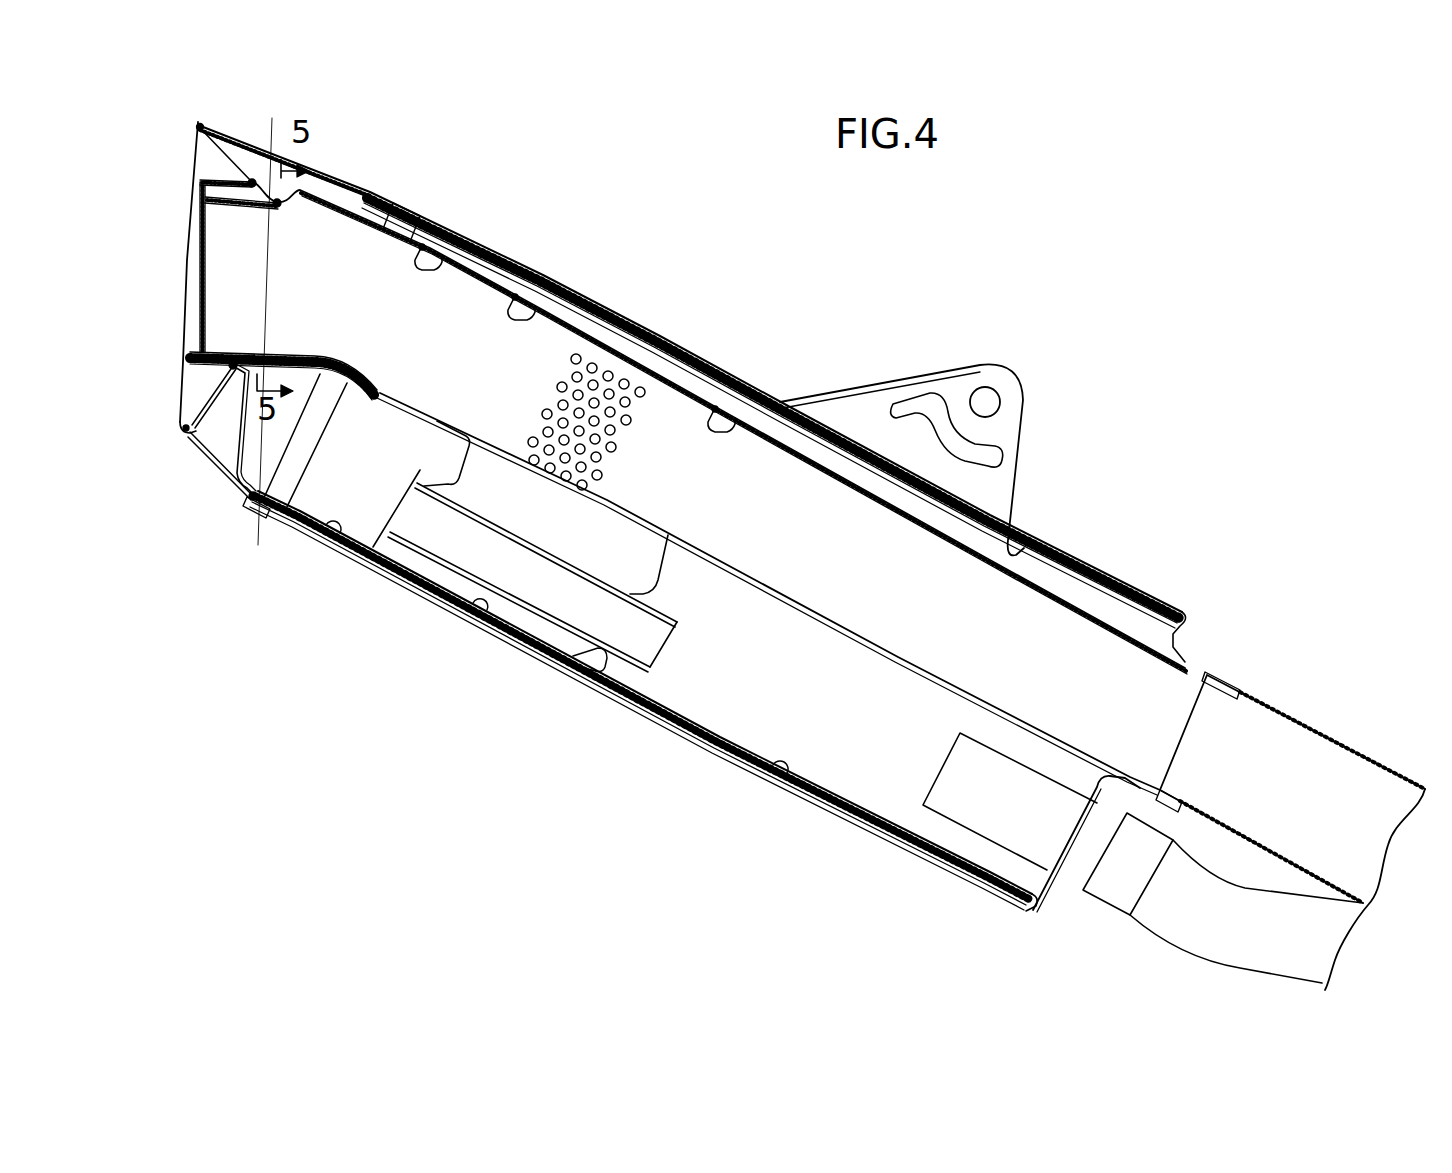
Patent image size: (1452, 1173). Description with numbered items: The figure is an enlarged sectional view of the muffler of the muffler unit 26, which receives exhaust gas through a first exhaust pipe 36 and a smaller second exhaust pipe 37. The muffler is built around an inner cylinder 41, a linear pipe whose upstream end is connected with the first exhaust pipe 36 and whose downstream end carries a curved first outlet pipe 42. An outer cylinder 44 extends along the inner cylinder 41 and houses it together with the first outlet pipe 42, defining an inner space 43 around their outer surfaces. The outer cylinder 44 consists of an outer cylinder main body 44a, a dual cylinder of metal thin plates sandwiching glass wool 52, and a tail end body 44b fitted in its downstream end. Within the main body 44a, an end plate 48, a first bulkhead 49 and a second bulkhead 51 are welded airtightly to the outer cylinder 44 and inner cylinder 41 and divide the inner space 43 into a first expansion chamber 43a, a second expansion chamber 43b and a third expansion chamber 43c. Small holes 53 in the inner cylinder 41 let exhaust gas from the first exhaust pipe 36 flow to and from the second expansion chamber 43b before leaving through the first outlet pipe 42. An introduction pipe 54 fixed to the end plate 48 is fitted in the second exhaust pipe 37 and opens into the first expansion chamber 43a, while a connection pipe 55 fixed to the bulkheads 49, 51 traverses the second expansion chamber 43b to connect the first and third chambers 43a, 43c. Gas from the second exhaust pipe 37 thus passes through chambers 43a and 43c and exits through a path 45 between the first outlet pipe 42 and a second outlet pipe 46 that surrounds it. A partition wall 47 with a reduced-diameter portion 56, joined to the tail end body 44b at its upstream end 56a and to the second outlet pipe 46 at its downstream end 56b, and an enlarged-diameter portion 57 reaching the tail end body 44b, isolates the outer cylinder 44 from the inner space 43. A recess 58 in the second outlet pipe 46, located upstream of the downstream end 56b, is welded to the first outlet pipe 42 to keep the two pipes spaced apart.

The muffler unit 26 is at (1052, 457).
The first exhaust pipe 36 is at (1298, 733).
The second exhaust pipe 37 is at (1200, 940).
The inner cylinder 41 is at (898, 657).
The first outlet pipe 42 is at (377, 392).
The inner space 43 is at (1023, 553).
The first expansion chamber 43a is at (782, 768).
The second expansion chamber 43b is at (480, 604).
The third expansion chamber 43c is at (333, 528).
The outer cylinder 44 is at (1097, 570).
The outer cylinder main body 44a is at (747, 380).
The tail end body 44b is at (232, 137).
The path 45 is at (430, 253).
The second outlet pipe 46 is at (360, 212).
The partition wall 47 is at (278, 316).
The end plate 48 is at (1048, 892).
The first bulkhead 49 is at (657, 584).
The second bulkhead 51 is at (457, 467).
The glass wool 52 is at (651, 340).
The small holes 53 is at (617, 450).
The introduction pipe 54 is at (957, 767).
The connection pipe 55 is at (553, 553).
The reduced-diameter portion 56 is at (237, 447).
The upstream end 56a is at (403, 212).
The downstream end 56b is at (250, 187).
The enlarged-diameter portion 57 is at (210, 393).
The recess 58 is at (300, 212).